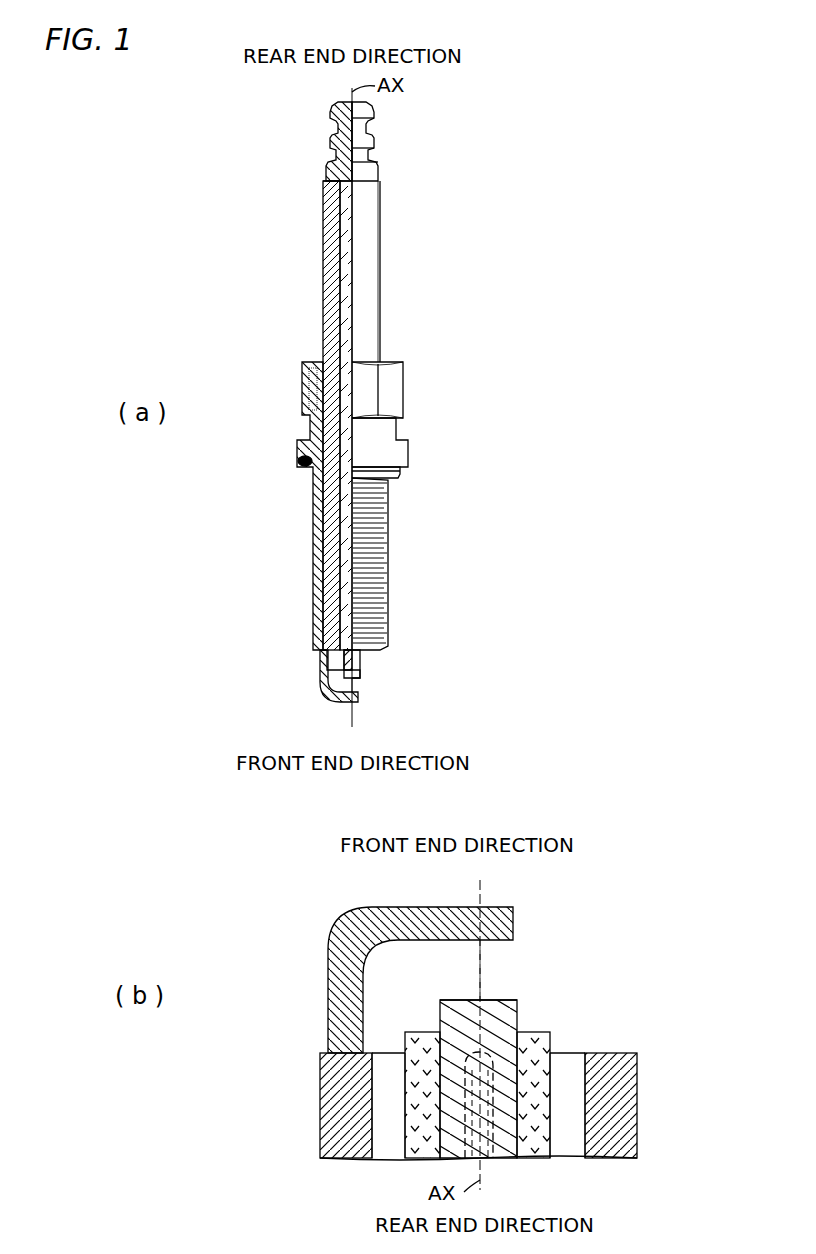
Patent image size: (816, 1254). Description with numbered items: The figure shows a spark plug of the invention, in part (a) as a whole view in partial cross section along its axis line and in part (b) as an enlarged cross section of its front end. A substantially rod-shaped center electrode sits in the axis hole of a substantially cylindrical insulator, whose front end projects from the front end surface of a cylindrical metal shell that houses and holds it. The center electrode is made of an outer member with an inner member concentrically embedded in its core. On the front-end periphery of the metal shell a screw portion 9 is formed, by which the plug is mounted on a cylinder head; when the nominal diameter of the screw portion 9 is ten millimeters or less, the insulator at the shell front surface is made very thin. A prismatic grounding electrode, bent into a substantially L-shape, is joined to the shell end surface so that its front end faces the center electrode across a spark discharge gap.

The screw portion 9 is at (385, 563).